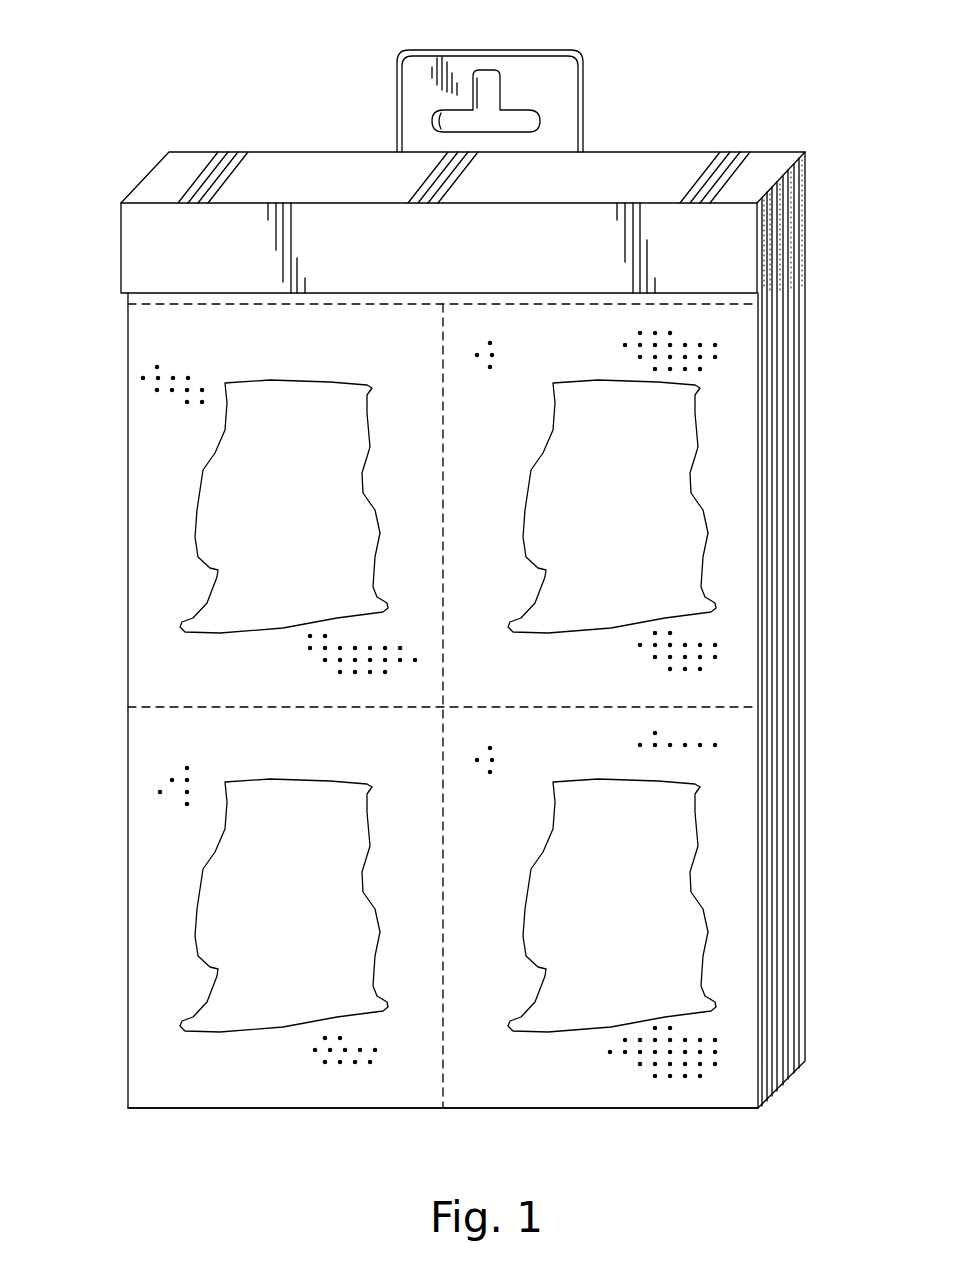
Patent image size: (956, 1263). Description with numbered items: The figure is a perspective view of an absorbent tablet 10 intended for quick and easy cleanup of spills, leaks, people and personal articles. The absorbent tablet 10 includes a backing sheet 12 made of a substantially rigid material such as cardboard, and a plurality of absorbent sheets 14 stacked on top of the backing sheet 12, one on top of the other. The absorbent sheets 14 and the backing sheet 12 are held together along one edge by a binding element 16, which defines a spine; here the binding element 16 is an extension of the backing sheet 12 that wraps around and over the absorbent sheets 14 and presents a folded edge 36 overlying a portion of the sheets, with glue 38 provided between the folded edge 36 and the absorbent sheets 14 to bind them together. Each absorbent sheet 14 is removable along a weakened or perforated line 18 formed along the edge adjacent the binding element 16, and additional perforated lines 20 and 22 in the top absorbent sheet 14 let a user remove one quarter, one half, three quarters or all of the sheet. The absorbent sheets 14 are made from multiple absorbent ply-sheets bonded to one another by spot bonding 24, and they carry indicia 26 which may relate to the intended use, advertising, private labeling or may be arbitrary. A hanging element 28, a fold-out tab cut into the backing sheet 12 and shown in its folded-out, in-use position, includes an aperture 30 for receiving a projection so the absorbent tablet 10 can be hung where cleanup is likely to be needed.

The absorbent tablet 10 is at (258, 132).
The backing sheet 12 is at (805, 448).
The absorbent sheets 14 is at (792, 1078).
The binding element 16 is at (140, 183).
The perforated line 18 is at (268, 305).
The additional perforated line 20 is at (445, 478).
The additional perforated line 22 is at (268, 708).
The spot bonding 24 is at (143, 380).
The indicia 26 is at (310, 534).
The hanging element 28 is at (555, 96).
The aperture 30 is at (455, 120).
The folded edge 36 is at (236, 264).
The glue 38 is at (795, 218).